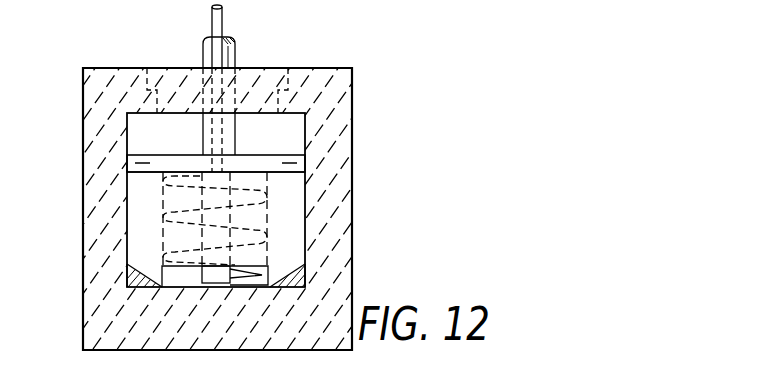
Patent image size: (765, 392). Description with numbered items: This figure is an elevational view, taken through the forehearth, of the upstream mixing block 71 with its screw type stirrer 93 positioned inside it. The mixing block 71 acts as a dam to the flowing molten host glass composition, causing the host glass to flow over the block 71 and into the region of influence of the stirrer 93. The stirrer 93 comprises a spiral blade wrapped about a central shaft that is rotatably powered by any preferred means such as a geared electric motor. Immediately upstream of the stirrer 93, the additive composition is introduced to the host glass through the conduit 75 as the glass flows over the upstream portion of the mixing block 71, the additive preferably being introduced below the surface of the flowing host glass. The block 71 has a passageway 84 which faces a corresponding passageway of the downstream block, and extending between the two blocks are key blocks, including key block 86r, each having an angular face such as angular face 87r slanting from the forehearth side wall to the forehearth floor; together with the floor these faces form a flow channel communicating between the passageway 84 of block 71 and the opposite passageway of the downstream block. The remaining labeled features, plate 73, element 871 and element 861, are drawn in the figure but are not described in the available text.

The conduit 75 is at (212, 20).
The screw type stirrer 93 is at (244, 192).
The plate 73 is at (152, 154).
The mixing block 71 is at (273, 173).
The right wedge wall 871 is at (292, 265).
The right wedge 861 is at (298, 283).
The angular face 87r is at (145, 270).
The key block 86r is at (127, 271).
The passageway 84 is at (181, 287).